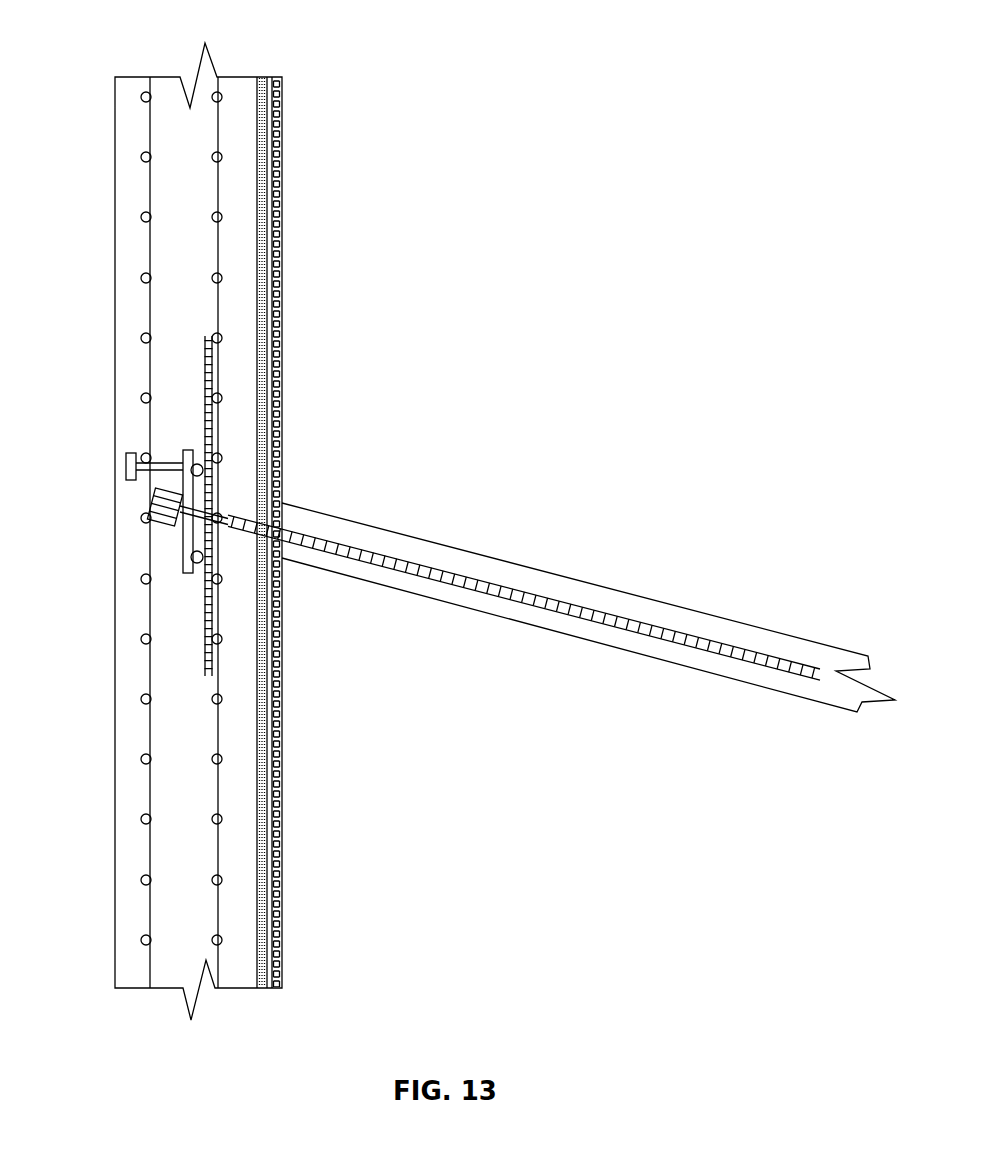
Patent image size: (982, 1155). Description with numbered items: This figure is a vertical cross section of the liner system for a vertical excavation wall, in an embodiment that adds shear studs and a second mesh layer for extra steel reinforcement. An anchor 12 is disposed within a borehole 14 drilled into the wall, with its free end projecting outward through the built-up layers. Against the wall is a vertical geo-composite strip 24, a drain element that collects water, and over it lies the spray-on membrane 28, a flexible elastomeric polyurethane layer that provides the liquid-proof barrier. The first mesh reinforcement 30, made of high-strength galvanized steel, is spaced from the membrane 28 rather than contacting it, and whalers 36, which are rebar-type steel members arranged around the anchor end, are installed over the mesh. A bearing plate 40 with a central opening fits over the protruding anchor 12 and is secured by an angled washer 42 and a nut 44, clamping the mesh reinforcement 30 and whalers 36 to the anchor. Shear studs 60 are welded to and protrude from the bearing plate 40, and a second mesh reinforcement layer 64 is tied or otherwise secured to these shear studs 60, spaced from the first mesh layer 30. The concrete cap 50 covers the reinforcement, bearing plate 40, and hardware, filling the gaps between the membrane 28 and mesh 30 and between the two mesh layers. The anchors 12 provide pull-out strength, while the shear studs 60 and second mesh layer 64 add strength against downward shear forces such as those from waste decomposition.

The anchor 12 is at (619, 557).
The borehole 14 is at (435, 543).
The vertical geo-composite strip 24 is at (276, 77).
The membrane 28 is at (262, 77).
The mesh reinforcement 30 is at (218, 172).
The whaler 36 is at (205, 368).
The bearing plate 40 is at (185, 450).
The angled washer 42 is at (153, 530).
The nut 44 is at (158, 497).
The concrete cap 50 is at (115, 182).
The shear stud 60 is at (126, 465).
The second mesh reinforcement layer 64 is at (150, 265).